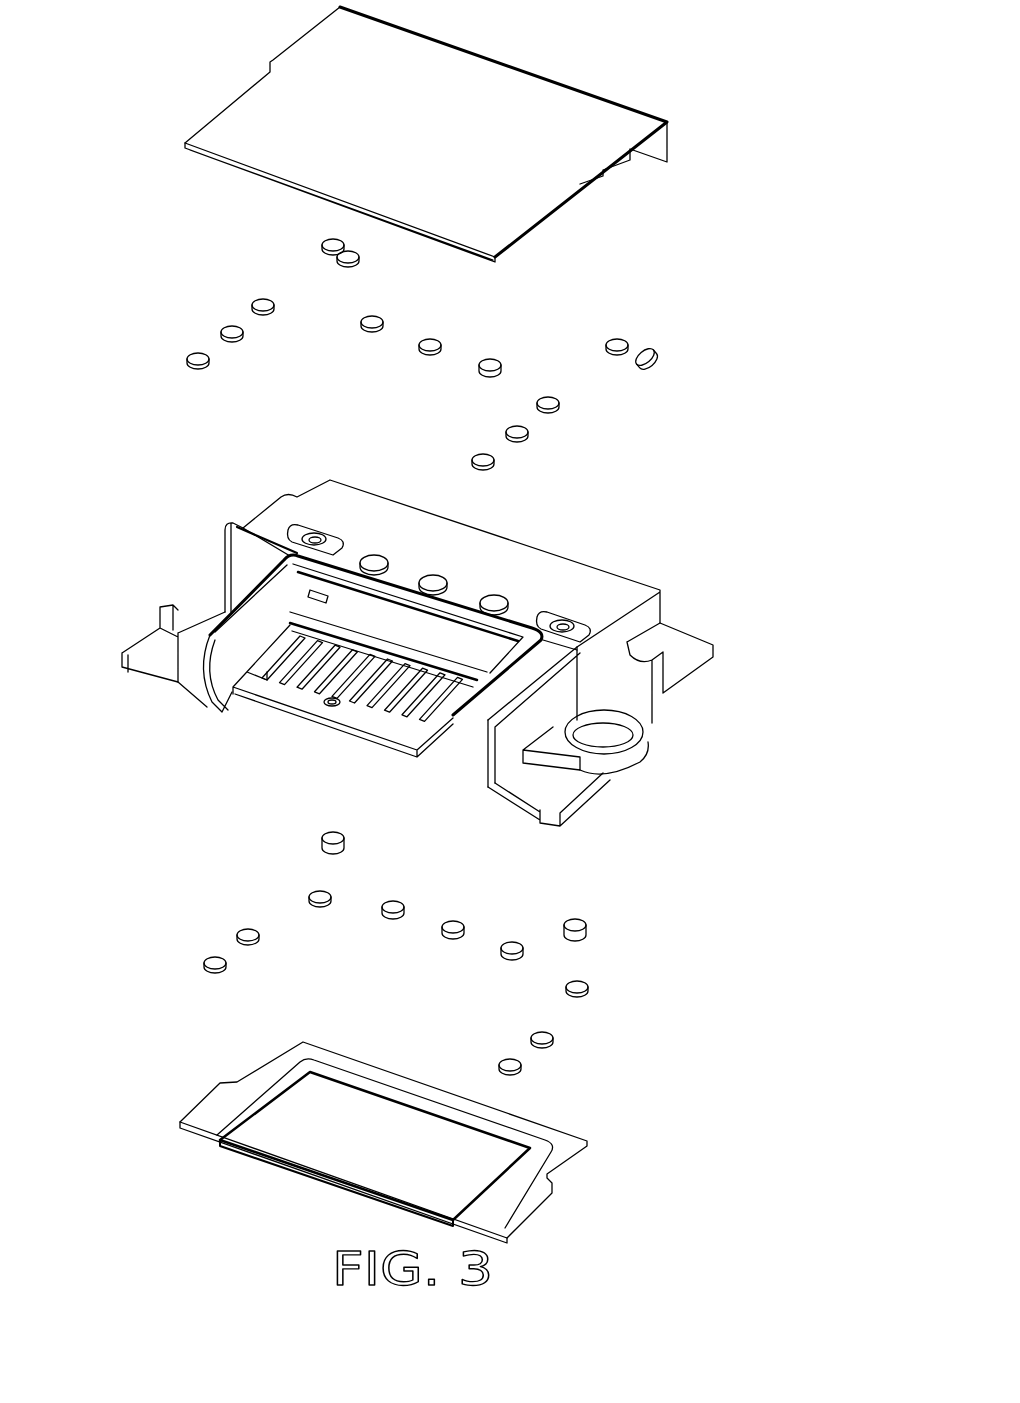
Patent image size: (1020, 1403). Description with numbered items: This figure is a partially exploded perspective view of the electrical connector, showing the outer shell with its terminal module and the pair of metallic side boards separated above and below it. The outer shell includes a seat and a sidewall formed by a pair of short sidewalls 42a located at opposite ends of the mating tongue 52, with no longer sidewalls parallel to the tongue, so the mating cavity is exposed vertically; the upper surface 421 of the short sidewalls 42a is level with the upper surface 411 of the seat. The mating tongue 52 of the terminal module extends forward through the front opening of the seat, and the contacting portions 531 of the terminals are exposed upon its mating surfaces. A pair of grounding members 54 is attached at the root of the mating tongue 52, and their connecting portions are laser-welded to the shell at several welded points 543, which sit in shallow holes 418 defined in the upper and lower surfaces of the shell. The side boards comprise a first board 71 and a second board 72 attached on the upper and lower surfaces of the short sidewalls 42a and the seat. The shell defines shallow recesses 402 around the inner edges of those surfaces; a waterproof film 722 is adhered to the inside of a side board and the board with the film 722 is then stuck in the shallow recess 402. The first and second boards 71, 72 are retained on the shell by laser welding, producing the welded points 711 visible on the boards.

The first board 71 is at (507, 95).
The welded points 711 is at (197, 355).
The welded points 543 is at (487, 357).
The shallow holes 418 is at (435, 580).
The upper surface of the seat 411 is at (527, 615).
The grounding members 54 is at (357, 620).
The upper surface of the short sidewalls 421 is at (220, 590).
The short sidewalls 42a is at (192, 658).
The mating tongue 52 is at (310, 688).
The contacting portions 531 is at (330, 672).
The shallow recesses 402 is at (623, 645).
The waterproof film 722 is at (270, 1098).
The second board 72 is at (327, 1158).